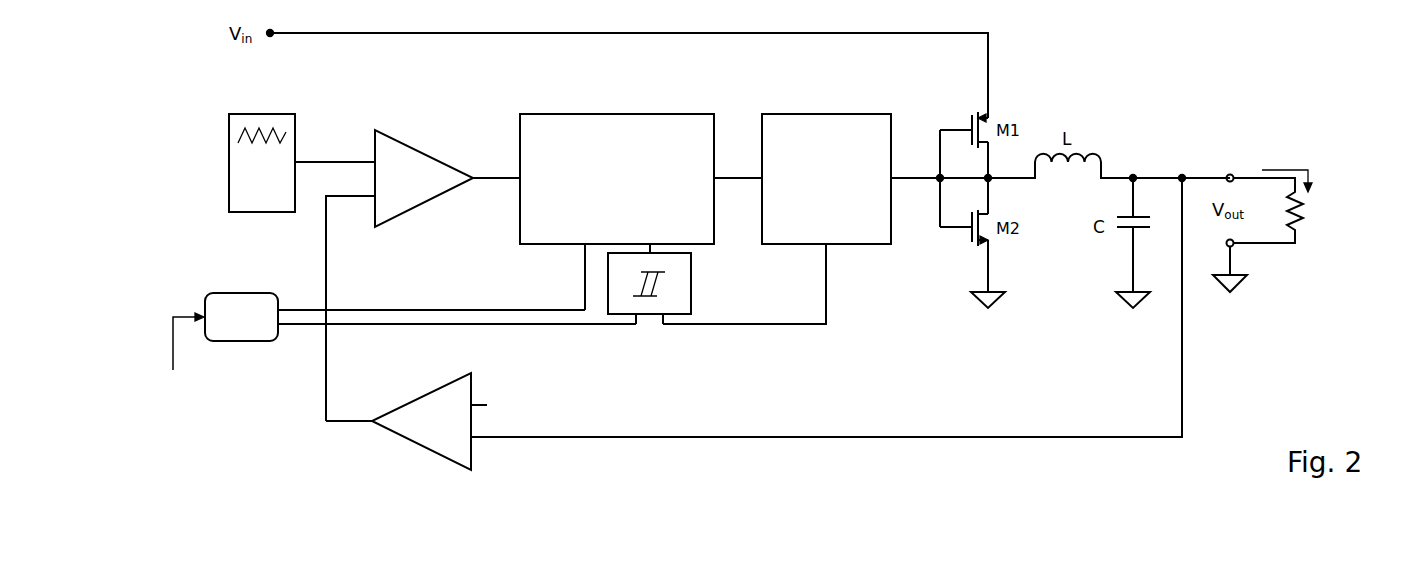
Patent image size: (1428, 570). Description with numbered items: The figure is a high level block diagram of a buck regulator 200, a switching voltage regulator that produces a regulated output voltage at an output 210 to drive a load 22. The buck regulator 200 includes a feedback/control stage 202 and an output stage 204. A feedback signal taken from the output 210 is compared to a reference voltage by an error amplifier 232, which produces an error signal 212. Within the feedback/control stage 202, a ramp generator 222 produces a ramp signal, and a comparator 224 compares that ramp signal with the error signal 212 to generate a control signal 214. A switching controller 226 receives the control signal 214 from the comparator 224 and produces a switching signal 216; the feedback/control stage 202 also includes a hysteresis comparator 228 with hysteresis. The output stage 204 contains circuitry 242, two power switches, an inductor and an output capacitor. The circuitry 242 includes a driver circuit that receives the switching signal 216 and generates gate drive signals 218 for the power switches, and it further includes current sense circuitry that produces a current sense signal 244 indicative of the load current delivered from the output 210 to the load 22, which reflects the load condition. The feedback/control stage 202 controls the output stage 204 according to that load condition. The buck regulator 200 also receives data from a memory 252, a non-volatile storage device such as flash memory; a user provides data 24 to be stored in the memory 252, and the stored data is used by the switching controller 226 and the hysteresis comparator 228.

The buck regulator 200 is at (1104, 46).
The feedback/control stage 202 is at (714, 103).
The output stage 204 is at (1148, 340).
The output 210 is at (1227, 175).
The error signal 212 is at (330, 261).
The control signal 214 is at (492, 182).
The switching signal 216 is at (740, 182).
The gate drive signals 218 is at (917, 182).
The load 22 is at (1366, 228).
The ramp generator 222 is at (262, 213).
The comparator 224 is at (398, 140).
The switching controller 226 is at (617, 179).
The hysteresis comparator 228 is at (691, 283).
The error amplifier 232 is at (431, 390).
The data 24 is at (177, 353).
The circuitry 242 is at (826, 179).
The current sense signal 244 is at (826, 283).
The memory 252 is at (420, 317).